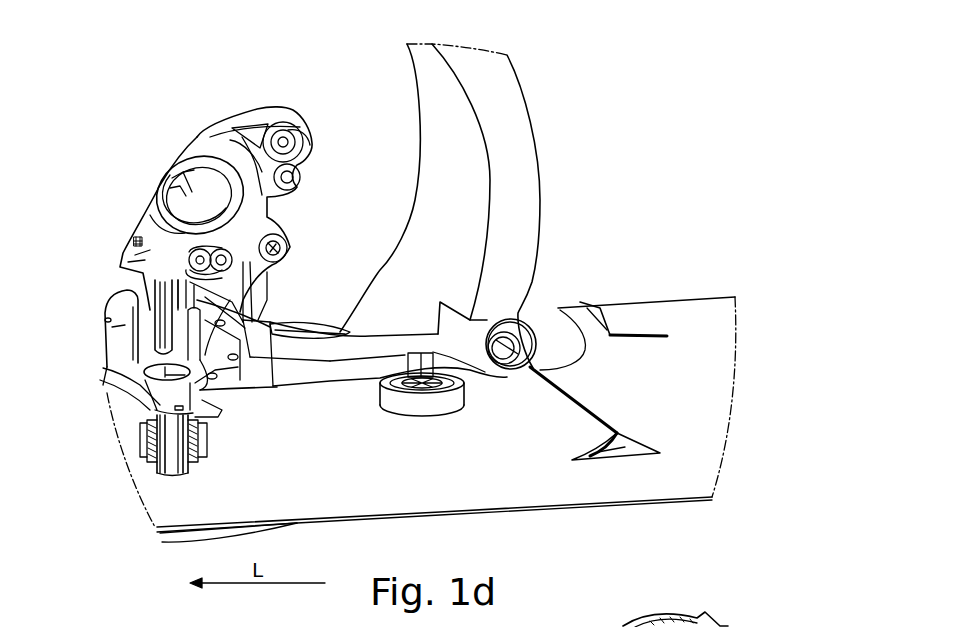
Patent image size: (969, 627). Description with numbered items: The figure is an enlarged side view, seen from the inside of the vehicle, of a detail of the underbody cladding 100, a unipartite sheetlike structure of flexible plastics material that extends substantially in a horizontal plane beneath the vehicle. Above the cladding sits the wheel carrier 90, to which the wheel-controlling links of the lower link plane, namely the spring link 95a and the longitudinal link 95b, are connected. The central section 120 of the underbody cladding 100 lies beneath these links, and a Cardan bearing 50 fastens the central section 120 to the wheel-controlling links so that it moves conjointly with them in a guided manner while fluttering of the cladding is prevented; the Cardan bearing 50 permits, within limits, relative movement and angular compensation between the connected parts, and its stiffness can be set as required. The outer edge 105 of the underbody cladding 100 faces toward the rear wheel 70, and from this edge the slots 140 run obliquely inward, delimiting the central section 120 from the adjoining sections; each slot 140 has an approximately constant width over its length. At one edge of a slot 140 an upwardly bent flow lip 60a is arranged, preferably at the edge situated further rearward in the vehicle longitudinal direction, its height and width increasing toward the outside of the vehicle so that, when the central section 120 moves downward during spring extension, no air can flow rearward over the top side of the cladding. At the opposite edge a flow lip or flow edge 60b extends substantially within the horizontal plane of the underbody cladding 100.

The wheel carrier 90 is at (203, 140).
The rear wheel 70 is at (524, 145).
The spring link 95a is at (112, 377).
The longitudinal link 95b is at (348, 336).
The outer edge 105 is at (555, 367).
The Cardan bearing 50 is at (428, 405).
The underbody cladding 100 is at (737, 303).
The central section 120 is at (352, 490).
The flow lip 60a is at (533, 397).
The flow lip 60b is at (623, 450).
The slot 140 is at (614, 456).